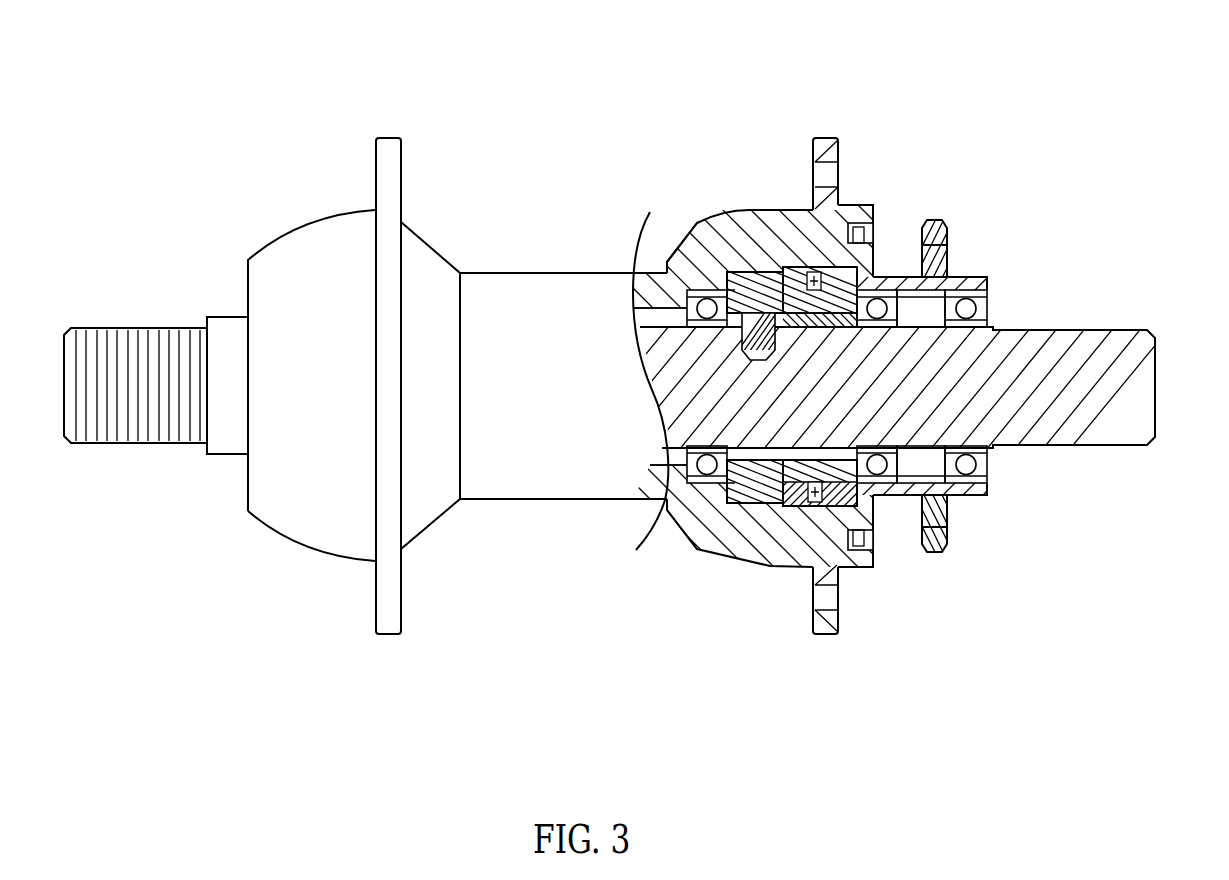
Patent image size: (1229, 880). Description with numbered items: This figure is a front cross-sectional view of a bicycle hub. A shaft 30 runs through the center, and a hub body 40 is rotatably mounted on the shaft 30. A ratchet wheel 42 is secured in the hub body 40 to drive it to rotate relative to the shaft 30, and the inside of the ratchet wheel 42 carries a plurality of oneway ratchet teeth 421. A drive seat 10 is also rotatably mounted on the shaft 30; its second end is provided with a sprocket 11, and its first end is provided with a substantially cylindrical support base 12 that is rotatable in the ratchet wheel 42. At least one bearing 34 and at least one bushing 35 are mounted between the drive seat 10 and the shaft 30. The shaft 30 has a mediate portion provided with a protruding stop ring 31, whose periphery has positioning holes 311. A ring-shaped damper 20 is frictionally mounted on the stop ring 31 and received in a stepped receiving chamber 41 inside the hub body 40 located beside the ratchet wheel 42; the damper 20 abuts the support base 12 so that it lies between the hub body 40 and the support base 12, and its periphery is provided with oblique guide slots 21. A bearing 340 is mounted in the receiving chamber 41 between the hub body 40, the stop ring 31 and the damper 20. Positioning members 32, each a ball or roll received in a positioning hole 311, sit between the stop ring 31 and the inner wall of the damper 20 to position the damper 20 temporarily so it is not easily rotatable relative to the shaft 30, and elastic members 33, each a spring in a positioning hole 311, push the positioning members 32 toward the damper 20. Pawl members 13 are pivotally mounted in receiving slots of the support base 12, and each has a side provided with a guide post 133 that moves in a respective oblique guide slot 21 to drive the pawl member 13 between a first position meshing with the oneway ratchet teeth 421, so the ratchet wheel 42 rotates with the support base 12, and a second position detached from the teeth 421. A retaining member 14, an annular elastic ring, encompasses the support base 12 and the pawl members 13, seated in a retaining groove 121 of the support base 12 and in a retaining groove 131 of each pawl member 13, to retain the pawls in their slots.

The drive seat 10 is at (962, 263).
The sprocket 11 is at (935, 220).
The support base 12 is at (833, 268).
The retaining groove 121 is at (783, 268).
The pawl member 13 is at (878, 507).
The retaining groove 131 is at (850, 583).
The guide post 133 is at (775, 510).
The retaining member 14 is at (783, 268).
The damper 20 is at (705, 245).
The oblique guide slot 21 is at (775, 510).
The shaft 30 is at (1075, 417).
The stop ring 31 is at (690, 522).
The positioning hole 311 is at (670, 462).
The positioning member 32 is at (670, 370).
The elastic member 33 is at (672, 410).
The bearing 34 is at (970, 467).
The bushing 35 is at (948, 525).
The bearing 340 is at (667, 258).
The hub body 40 is at (503, 523).
The stepped receiving chamber 41 is at (757, 265).
The ratchet wheel 42 is at (813, 640).
The oneway ratchet teeth 421 is at (873, 563).